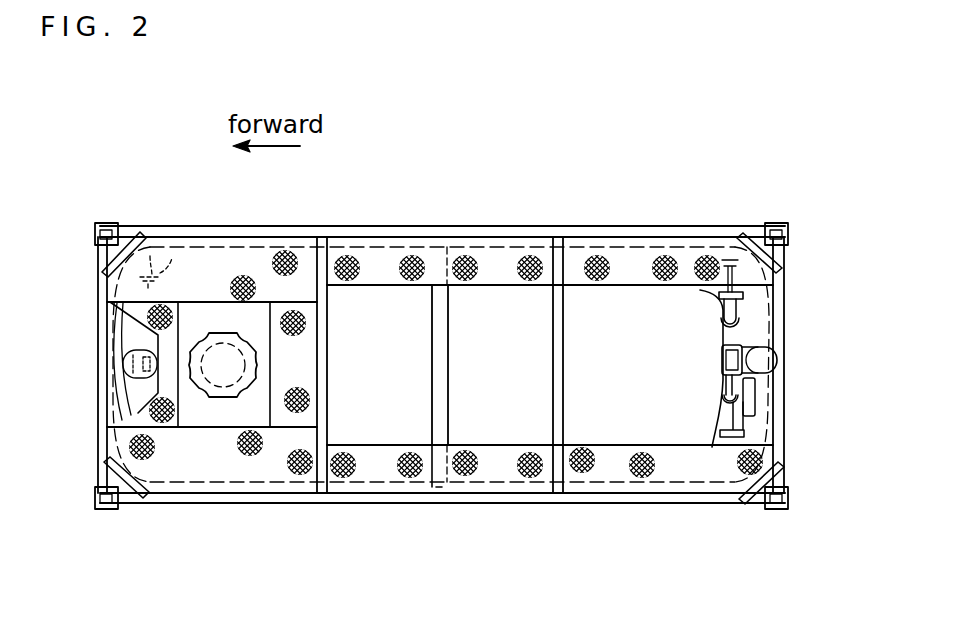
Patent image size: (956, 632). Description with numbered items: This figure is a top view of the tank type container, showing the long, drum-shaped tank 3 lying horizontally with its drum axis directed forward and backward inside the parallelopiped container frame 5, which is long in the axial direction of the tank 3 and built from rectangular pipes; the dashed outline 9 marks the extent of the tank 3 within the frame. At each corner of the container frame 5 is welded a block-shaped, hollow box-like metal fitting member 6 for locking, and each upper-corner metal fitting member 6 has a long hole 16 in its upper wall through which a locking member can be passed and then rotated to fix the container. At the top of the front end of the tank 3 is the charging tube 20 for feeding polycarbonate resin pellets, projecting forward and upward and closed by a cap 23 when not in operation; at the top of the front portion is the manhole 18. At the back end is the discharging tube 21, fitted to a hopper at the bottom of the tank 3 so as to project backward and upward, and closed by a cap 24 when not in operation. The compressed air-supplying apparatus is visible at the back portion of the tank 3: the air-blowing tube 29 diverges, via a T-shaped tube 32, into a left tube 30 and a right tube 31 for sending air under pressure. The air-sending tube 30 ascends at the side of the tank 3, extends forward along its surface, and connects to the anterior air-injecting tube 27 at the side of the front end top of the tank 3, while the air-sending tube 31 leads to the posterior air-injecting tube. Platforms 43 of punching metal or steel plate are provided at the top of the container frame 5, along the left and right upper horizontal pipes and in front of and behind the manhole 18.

The tank 3 is at (482, 312).
The container frame 5 is at (523, 227).
The metal fitting member for locking 6 is at (120, 234).
The body outline 9 is at (635, 247).
The long hole 16 is at (99, 228).
The manhole 18 is at (223, 388).
The charging tube 20 is at (124, 405).
The discharging tube 21 is at (720, 372).
The cap 23 is at (134, 365).
The cap 24 is at (762, 380).
The anterior air-injecting tube 27 is at (168, 270).
The air-blowing tube 29 is at (752, 300).
The left tube for sending air under pressure 30 is at (371, 243).
The right tube for sending air under pressure 31 is at (768, 357).
The T-shaped tube 32 is at (716, 288).
The platforms 43 is at (410, 262).